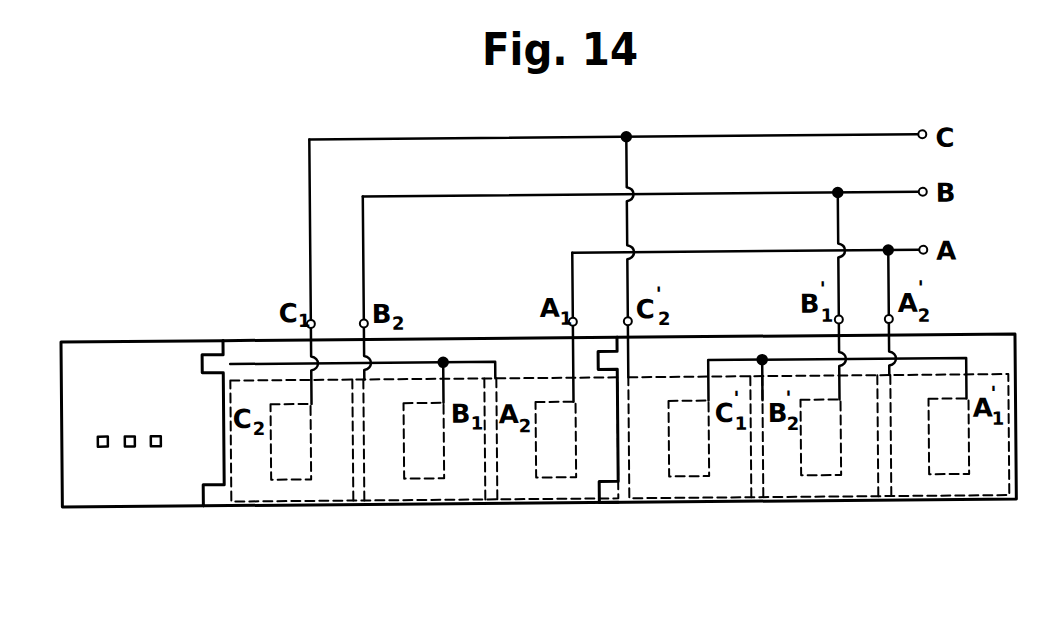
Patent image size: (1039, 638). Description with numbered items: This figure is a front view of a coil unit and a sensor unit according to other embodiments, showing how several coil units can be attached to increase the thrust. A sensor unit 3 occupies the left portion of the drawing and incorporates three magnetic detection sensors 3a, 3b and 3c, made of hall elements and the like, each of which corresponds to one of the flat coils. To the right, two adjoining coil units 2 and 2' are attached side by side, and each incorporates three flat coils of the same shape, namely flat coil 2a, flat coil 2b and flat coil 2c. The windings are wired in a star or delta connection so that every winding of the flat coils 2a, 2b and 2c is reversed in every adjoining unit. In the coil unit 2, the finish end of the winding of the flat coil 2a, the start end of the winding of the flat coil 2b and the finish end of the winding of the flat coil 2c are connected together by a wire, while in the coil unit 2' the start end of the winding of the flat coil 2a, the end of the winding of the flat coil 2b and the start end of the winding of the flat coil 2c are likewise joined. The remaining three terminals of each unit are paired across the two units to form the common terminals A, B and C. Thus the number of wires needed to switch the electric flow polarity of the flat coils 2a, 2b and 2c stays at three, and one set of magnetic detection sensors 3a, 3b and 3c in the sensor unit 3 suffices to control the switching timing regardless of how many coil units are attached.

The coil unit 2 is at (410, 478).
The coil unit 2' is at (807, 466).
The flat coil 2a is at (537, 512).
The flat coil 2b is at (404, 511).
The flat coil 2c is at (275, 510).
The sensor unit 3 is at (161, 359).
The magnetic detection sensor 3a is at (102, 448).
The magnetic detection sensor 3b is at (129, 448).
The magnetic detection sensor 3c is at (155, 448).